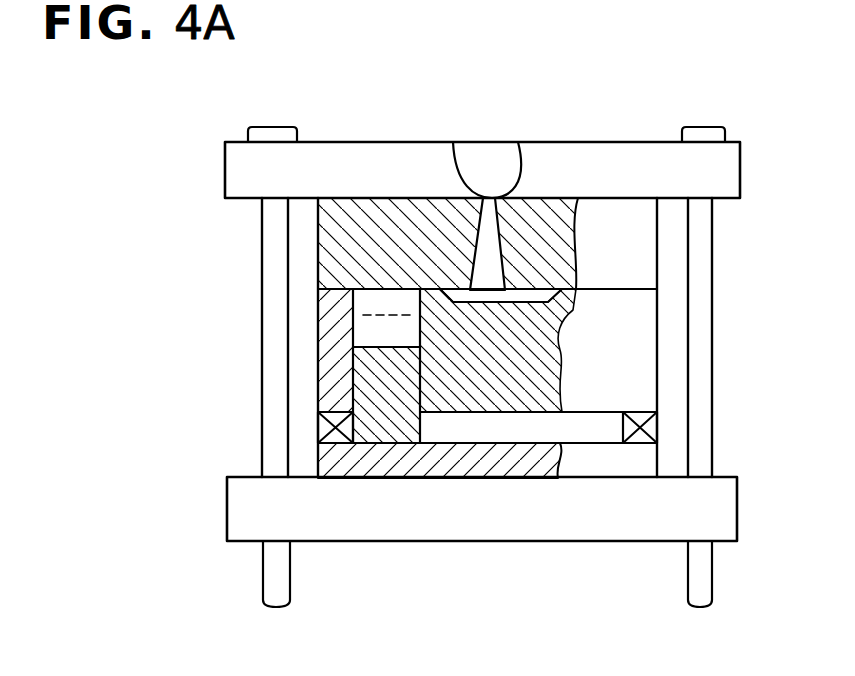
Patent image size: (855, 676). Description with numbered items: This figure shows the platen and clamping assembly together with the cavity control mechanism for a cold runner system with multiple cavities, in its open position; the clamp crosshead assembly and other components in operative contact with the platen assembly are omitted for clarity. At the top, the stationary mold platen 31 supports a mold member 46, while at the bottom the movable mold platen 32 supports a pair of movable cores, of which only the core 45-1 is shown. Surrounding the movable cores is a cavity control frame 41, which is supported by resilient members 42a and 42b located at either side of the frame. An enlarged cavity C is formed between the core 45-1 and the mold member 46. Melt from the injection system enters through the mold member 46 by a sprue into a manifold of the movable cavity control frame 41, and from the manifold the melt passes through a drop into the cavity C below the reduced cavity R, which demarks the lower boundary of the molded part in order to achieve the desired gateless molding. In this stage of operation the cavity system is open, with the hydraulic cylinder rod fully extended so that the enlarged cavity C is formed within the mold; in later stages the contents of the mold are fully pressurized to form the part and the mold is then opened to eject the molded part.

The stationary mold platen 31 is at (225, 168).
The movable mold platen 32 is at (228, 527).
The cavity control frame 41 is at (332, 382).
The resilient member 42a is at (318, 428).
The resilient member 42b is at (657, 428).
The movable core 45-1 is at (392, 418).
The mold member 46 is at (630, 230).
The reduced cavity R is at (375, 303).
The enlarged cavity C is at (370, 340).